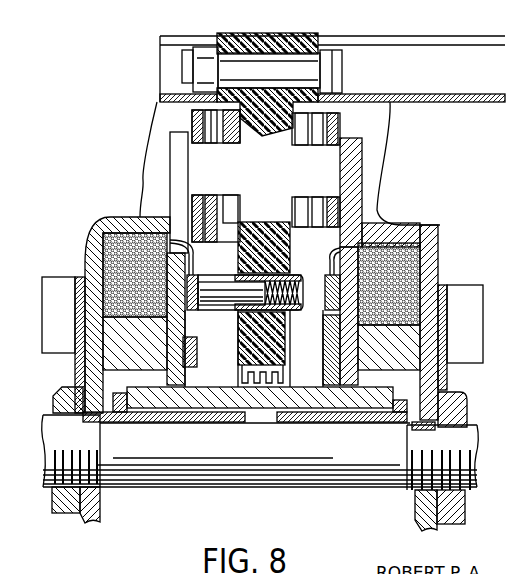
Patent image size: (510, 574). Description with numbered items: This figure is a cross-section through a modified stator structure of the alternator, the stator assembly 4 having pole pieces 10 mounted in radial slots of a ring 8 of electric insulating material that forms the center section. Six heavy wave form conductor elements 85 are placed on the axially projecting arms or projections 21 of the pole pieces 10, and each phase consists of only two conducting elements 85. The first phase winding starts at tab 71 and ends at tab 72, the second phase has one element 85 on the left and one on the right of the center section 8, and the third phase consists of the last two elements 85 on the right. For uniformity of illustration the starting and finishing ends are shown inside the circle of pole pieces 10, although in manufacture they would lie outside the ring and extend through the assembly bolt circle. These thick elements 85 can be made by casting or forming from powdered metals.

The stator assembly 4 is at (277, 36).
The ring of electric insulating material 8 is at (286, 259).
The pole piece 10 is at (372, 150).
The axially projecting arms of the pole pieces 21 is at (200, 165).
The tab 71 is at (224, 228).
The tab 72 is at (168, 216).
The heavy wave form conductor element 85 is at (208, 115).